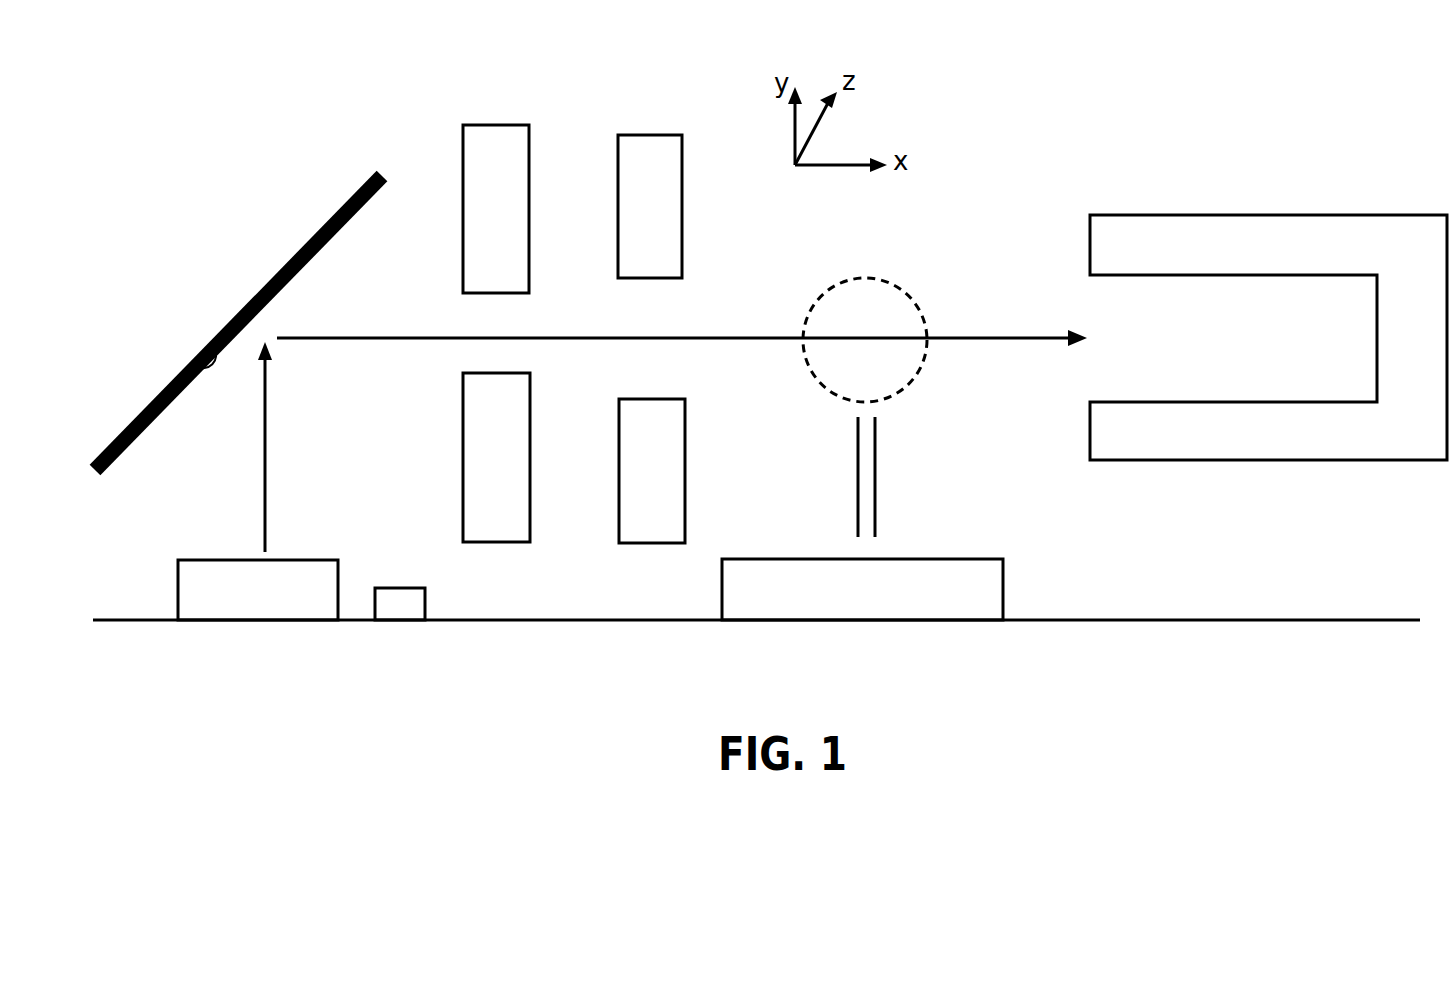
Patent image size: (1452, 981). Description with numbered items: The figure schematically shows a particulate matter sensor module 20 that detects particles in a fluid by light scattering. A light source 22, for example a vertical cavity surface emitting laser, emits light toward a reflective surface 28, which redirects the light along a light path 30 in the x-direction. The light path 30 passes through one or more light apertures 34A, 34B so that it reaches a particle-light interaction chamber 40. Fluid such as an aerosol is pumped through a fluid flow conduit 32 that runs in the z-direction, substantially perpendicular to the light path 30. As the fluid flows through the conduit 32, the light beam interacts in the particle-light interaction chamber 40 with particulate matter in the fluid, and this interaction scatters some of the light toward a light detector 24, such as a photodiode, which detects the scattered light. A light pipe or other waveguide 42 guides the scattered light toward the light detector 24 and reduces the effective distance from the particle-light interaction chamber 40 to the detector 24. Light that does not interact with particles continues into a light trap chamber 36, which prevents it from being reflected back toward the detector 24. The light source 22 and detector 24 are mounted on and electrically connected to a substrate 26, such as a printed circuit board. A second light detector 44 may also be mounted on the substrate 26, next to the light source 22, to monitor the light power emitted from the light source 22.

The particulate matter sensor module 20 is at (1163, 148).
The light source 22 is at (294, 605).
The light detector 24 is at (882, 607).
The substrate 26 is at (1227, 621).
The reflective surface 28 is at (187, 360).
The light path 30 is at (596, 342).
The fluid flow conduit 32 is at (878, 279).
The light aperture 34A is at (496, 333).
The light aperture 34B is at (651, 339).
The light trap chamber 36 is at (1268, 337).
The particle-light interaction chamber 40 is at (868, 342).
The light pipe or waveguide 42 is at (877, 488).
The second light detector 44 is at (403, 600).